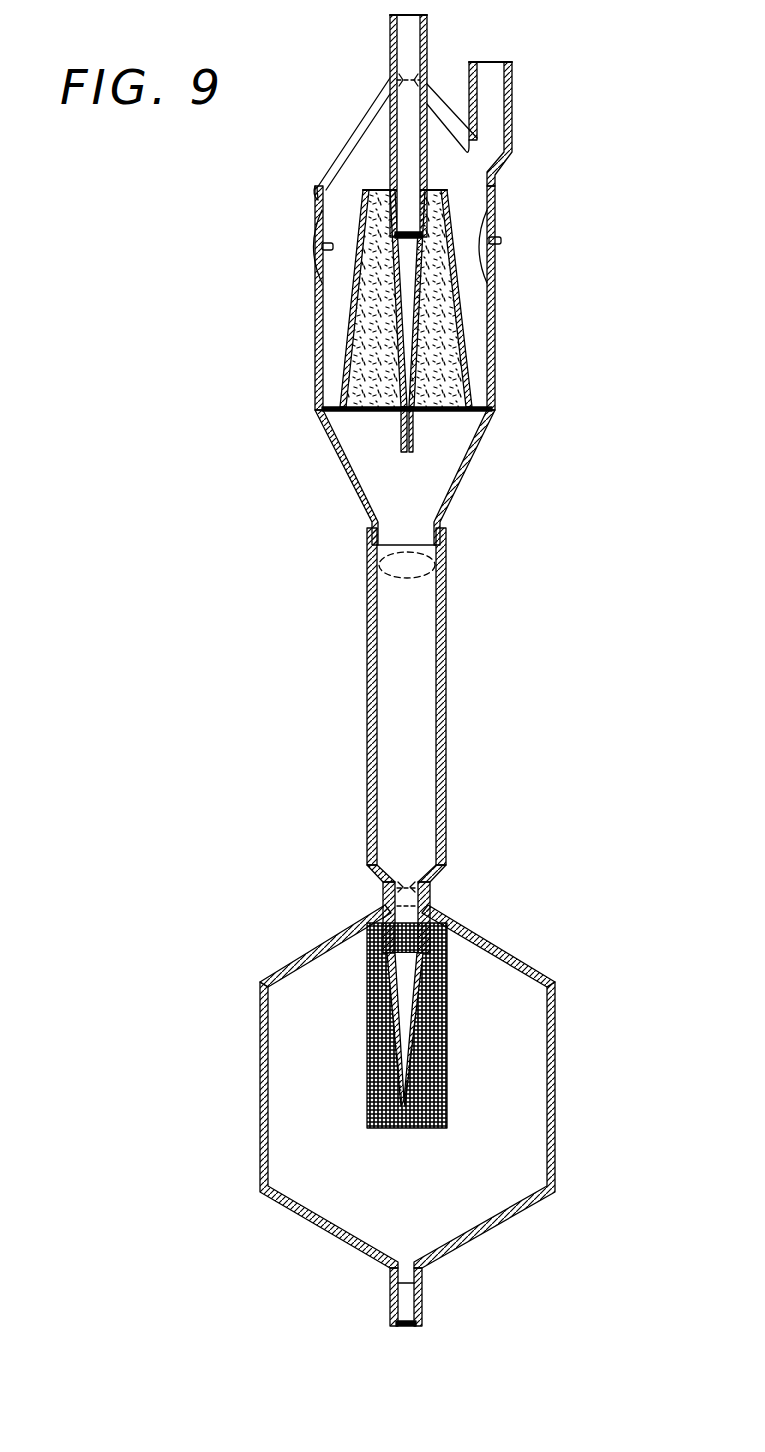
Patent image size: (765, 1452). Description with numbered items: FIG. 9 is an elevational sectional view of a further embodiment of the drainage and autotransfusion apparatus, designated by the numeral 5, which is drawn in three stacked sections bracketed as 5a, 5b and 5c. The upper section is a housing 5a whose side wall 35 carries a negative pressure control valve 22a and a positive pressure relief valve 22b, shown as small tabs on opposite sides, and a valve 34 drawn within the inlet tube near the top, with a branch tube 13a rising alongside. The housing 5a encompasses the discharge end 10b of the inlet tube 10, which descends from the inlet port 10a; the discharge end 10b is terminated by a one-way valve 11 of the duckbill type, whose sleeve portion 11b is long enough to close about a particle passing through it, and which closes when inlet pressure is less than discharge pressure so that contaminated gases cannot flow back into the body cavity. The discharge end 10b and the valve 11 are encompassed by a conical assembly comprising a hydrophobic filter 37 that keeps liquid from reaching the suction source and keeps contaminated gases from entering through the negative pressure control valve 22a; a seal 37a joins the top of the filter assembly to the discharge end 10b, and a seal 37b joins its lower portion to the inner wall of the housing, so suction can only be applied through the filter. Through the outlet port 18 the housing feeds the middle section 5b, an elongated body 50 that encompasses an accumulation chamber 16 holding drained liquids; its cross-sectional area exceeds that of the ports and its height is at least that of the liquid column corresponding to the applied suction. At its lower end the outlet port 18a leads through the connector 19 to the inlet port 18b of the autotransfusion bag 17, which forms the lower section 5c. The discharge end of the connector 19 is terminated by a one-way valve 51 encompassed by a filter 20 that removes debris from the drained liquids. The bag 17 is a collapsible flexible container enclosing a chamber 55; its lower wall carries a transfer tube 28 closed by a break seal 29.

The embodiment of the invention 5 is at (238, 449).
The housing 5a is at (670, 0).
The middle section 5b is at (662, 505).
The lower section 5c is at (662, 892).
The inlet tube 10 is at (356, 44).
The inlet port 10a is at (428, 56).
The discharge end of inlet tube 10b is at (384, 134).
The one-way valve 11 is at (333, 310).
The sleeve portion 11b is at (400, 452).
The vent tube 13a is at (517, 97).
The accumulation chamber 16 is at (423, 710).
The autotransfusion bag 17 is at (250, 1101).
The outlet port 18 is at (413, 580).
The outlet port 18a is at (406, 864).
The inlet port 18b is at (421, 902).
The connector 19 is at (385, 905).
The filter 20 is at (370, 1122).
The negative pressure control valve 22a is at (503, 240).
The positive pressure relief valve 22b is at (318, 249).
The transfer tube 28 is at (392, 1300).
The break seal 29 is at (424, 1286).
The valve 34 is at (392, 78).
The side wall 35 is at (497, 313).
The hydrophobic filter 37 is at (352, 368).
The seal 37a is at (372, 190).
The seal 37b is at (482, 406).
The elongated body 50 is at (447, 737).
The one-way valve 51 is at (368, 1012).
The chamber 55 is at (470, 1186).